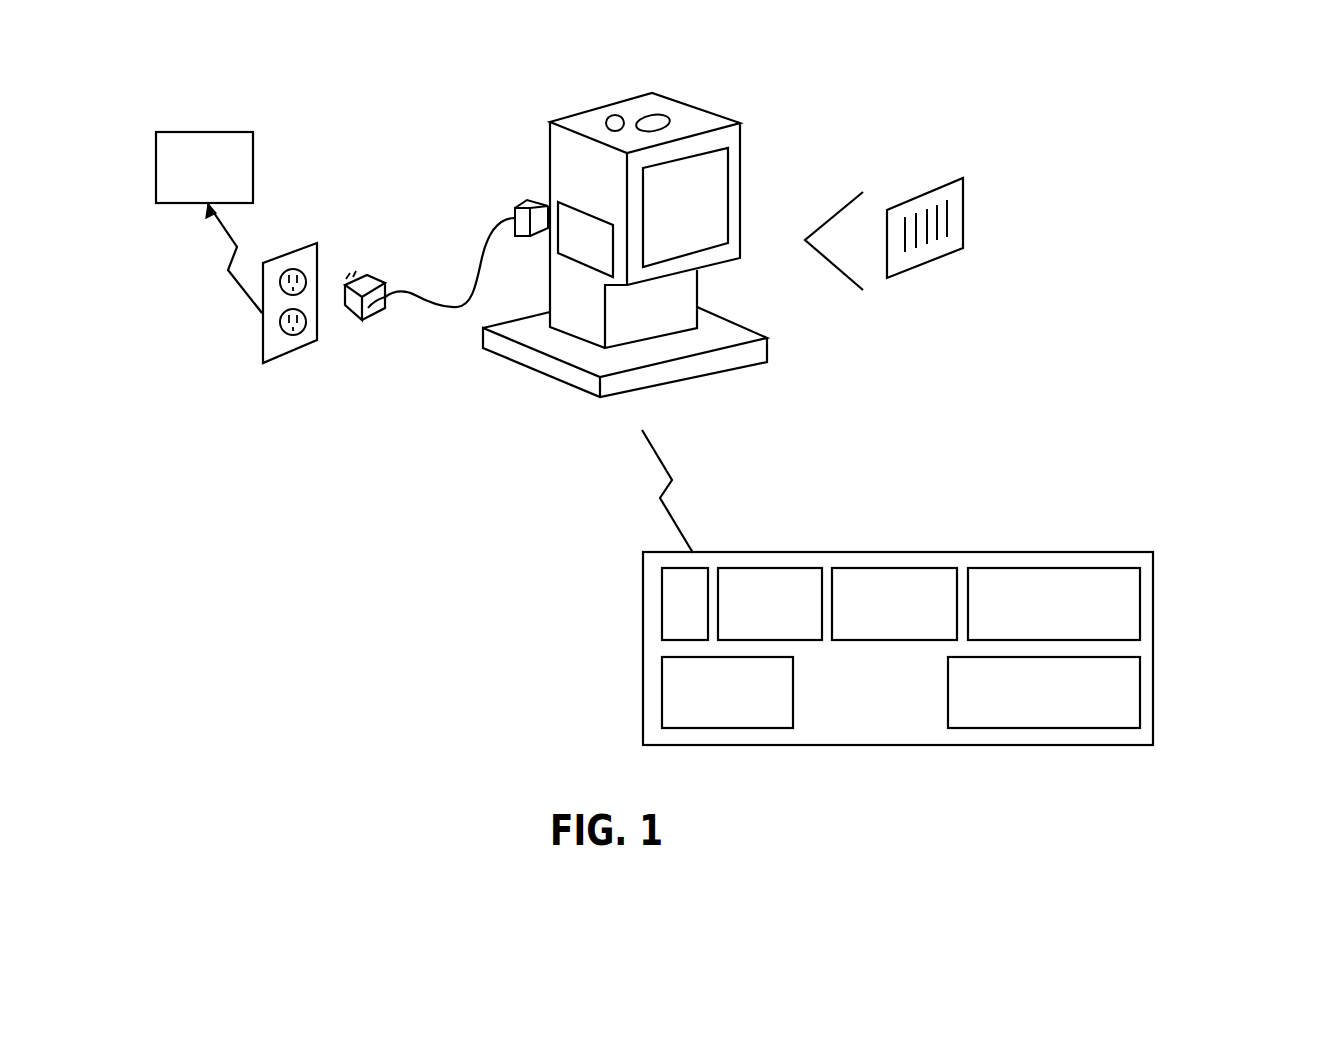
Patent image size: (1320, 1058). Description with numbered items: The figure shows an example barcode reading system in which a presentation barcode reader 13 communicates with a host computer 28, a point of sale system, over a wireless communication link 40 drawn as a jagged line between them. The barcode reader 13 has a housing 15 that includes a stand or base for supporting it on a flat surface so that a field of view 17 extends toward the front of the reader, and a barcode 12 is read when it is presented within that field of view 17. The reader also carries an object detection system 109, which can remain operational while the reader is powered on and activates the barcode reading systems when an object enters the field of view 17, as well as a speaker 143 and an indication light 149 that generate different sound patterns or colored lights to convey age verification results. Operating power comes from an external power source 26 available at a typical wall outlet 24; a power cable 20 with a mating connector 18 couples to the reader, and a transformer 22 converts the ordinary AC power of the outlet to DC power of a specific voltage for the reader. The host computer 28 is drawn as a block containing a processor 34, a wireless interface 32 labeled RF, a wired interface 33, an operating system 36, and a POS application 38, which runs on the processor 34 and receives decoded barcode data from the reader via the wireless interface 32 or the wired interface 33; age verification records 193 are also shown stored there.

The barcode 12 is at (965, 200).
The barcode reader 13 is at (693, 107).
The housing 15 is at (610, 102).
The field of view 17 is at (832, 213).
The mating connector 18 is at (527, 197).
The power cable 20 is at (433, 297).
The transformer 22 is at (378, 285).
The wall outlet 24 is at (288, 253).
The power source 26 is at (205, 131).
The host computer 28 is at (1153, 645).
The wireless interface 32 is at (660, 617).
The wired interface 33 is at (793, 568).
The processor 34 is at (660, 703).
The operating system 36 is at (1010, 728).
The POS application 38 is at (872, 568).
The wireless communication link 40 is at (683, 505).
The object detection system 109 is at (571, 254).
The speaker 143 is at (607, 120).
The indication light 149 is at (665, 115).
The age verification records 193 is at (1050, 568).